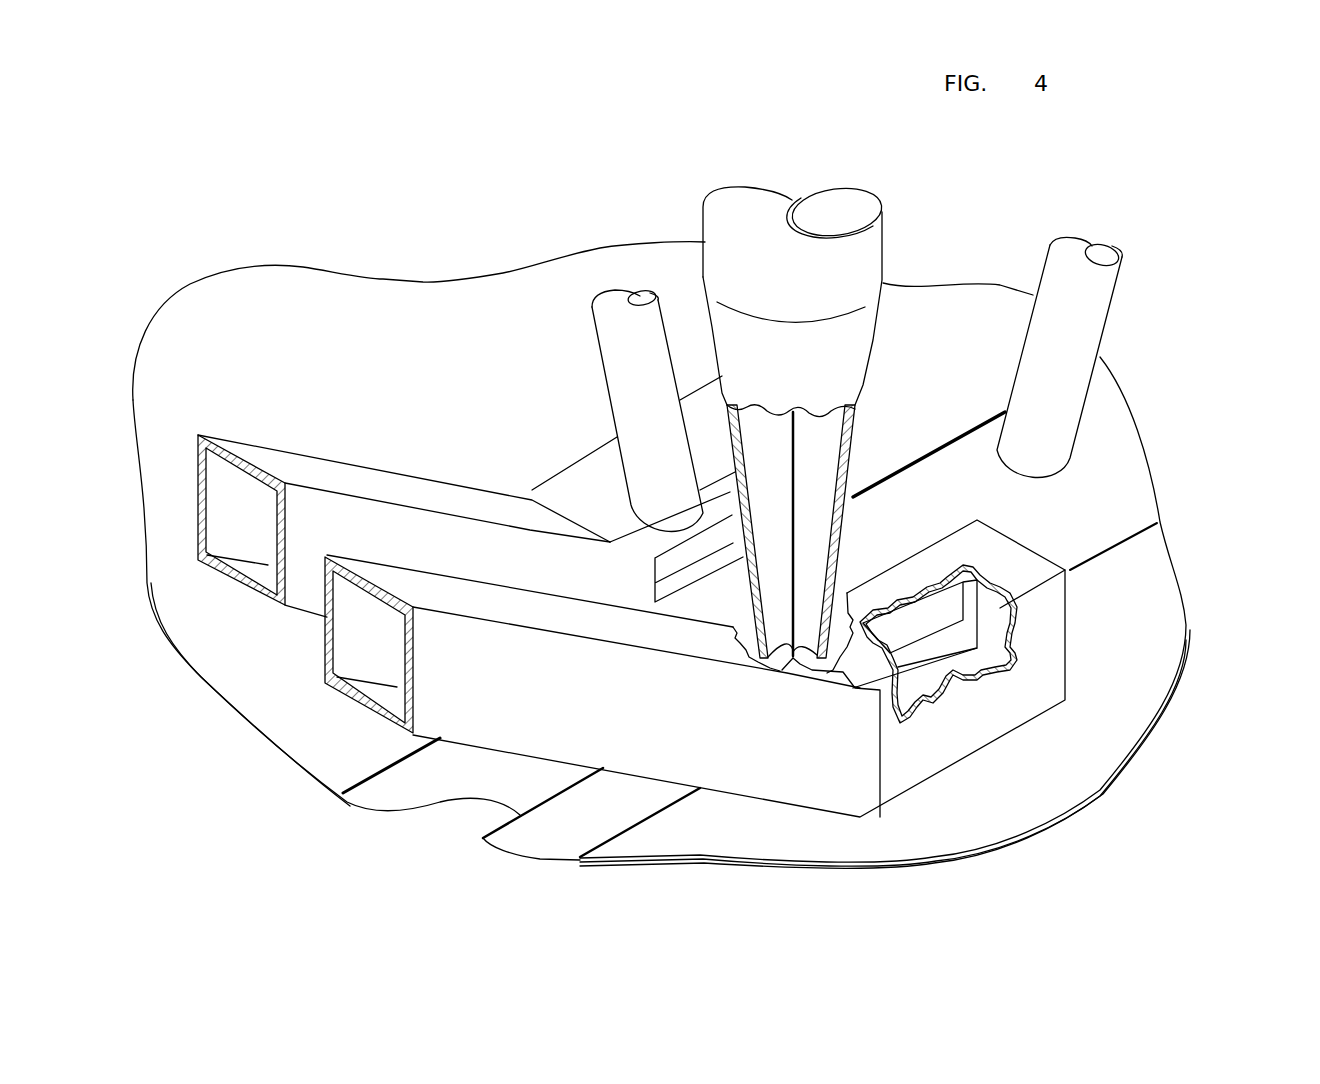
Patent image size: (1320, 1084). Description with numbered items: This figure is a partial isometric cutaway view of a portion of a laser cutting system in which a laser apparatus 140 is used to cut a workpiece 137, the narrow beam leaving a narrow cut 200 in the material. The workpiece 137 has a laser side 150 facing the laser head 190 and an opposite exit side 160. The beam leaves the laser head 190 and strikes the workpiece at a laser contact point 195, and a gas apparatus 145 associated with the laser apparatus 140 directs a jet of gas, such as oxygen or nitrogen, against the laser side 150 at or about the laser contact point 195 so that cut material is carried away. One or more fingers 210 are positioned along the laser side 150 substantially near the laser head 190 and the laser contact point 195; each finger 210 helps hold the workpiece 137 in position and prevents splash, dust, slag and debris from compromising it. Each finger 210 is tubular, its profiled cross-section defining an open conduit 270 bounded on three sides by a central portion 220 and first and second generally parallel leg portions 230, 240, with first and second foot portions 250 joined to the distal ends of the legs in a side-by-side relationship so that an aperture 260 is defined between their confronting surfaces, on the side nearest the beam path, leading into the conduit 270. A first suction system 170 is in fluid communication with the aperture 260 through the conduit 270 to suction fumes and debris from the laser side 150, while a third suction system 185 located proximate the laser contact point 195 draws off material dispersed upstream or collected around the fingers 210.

The workpiece 137 is at (1192, 690).
The laser apparatus 140 is at (626, 203).
The gas apparatus 145 is at (613, 405).
The laser side 150 is at (1097, 765).
The exit side 160 is at (1060, 825).
The first suction system 170 is at (316, 420).
The third suction system 185 is at (1132, 304).
The laser head 190 is at (865, 412).
The laser contact point 195 is at (804, 653).
The cut 200 is at (515, 816).
The finger 210 is at (753, 787).
The central portion 220 is at (900, 755).
The first leg portion 230 is at (1017, 557).
The second leg portion 240 is at (1015, 675).
The foot portion 250 is at (963, 700).
The aperture 260 is at (650, 573).
The conduit 270 is at (238, 506).